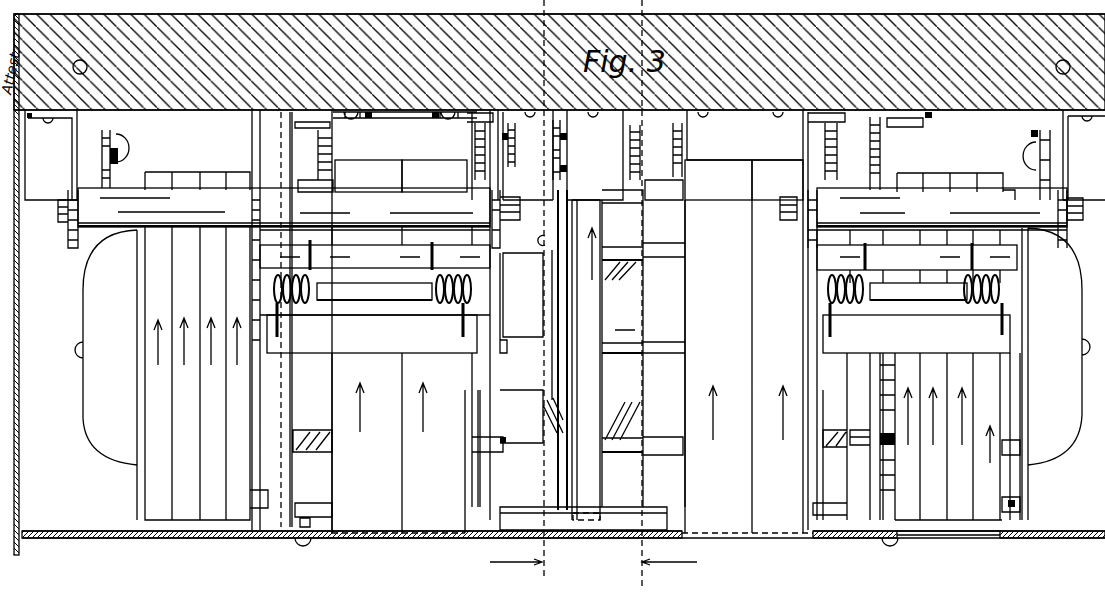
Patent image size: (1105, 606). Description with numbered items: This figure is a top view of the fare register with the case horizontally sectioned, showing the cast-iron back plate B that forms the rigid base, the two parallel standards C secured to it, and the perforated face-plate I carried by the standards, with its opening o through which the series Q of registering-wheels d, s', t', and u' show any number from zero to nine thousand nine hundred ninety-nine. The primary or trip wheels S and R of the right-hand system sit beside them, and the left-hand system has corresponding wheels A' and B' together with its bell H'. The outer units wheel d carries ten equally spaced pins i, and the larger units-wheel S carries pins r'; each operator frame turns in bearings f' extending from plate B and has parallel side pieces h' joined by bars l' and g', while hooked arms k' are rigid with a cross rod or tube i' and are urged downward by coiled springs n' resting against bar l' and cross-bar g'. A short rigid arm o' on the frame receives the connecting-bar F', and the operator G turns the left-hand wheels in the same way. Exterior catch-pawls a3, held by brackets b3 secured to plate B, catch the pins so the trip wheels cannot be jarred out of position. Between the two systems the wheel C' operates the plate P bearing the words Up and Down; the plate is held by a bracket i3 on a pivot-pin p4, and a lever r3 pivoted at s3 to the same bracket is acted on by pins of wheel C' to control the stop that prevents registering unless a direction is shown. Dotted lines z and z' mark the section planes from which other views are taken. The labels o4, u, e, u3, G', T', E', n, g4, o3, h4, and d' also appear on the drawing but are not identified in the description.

The back plate B is at (559, 62).
The pivot pin o4 is at (579, 69).
The opening in face-plate o is at (948, 548).
The base plate u is at (203, 553).
The pivot bearing e is at (602, 546).
The bearings f' is at (565, 321).
The contact strip u3 is at (517, 153).
The bracket i3 is at (596, 155).
The hook catch G' is at (124, 159).
The operator G is at (284, 207).
The cross-bar g' is at (570, 219).
The connecting-bar F' is at (937, 218).
The type-plate panel T' is at (193, 334).
The bell H' is at (106, 347).
The curved plate E' is at (1056, 317).
The standards C is at (573, 320).
The catch-pawls a3 is at (318, 152).
The brackets b3 is at (352, 119).
The registering-wheel A' is at (368, 176).
The registering-wheel B' is at (434, 176).
The trip wheel R is at (574, 361).
The primary registering units-wheel S is at (772, 360).
The series of registering-wheels Q is at (936, 152).
The arm o' is at (1053, 165).
The pins i is at (1022, 342).
The bar l' is at (659, 249).
The cross rod or tube i' is at (642, 291).
The coiled springs n' is at (587, 288).
The spring n is at (983, 289).
The guide bar g4 is at (635, 381).
The registering-wheel u' is at (904, 469).
The registering-wheel t' is at (931, 466).
The registering-wheel s' is at (958, 466).
The outer registering units wheel d is at (988, 455).
The hooked arms k' is at (624, 319).
The pins r' is at (853, 333).
The side pieces h' is at (643, 303).
The direction plate P is at (567, 391).
The wheel C' is at (586, 360).
The pivot s3 is at (545, 240).
The pivot-pin p4 is at (588, 195).
The lever r3 is at (553, 303).
The block o3 is at (616, 247).
The bracket h4 is at (668, 205).
The slide d' is at (660, 306).
The dotted section line z is at (517, 290).
The dotted section line z' is at (669, 297).
The face-plate I is at (578, 553).